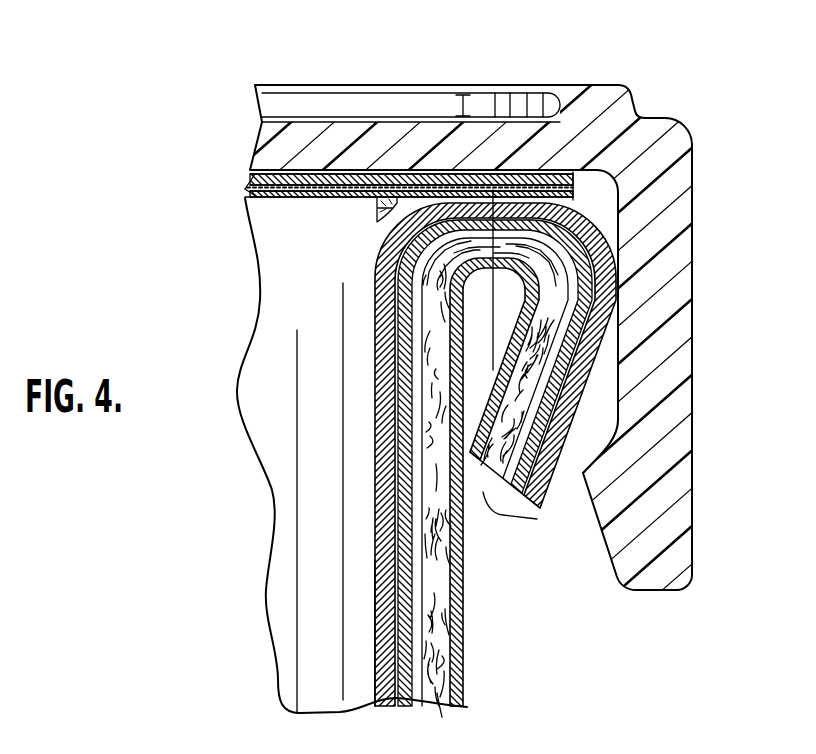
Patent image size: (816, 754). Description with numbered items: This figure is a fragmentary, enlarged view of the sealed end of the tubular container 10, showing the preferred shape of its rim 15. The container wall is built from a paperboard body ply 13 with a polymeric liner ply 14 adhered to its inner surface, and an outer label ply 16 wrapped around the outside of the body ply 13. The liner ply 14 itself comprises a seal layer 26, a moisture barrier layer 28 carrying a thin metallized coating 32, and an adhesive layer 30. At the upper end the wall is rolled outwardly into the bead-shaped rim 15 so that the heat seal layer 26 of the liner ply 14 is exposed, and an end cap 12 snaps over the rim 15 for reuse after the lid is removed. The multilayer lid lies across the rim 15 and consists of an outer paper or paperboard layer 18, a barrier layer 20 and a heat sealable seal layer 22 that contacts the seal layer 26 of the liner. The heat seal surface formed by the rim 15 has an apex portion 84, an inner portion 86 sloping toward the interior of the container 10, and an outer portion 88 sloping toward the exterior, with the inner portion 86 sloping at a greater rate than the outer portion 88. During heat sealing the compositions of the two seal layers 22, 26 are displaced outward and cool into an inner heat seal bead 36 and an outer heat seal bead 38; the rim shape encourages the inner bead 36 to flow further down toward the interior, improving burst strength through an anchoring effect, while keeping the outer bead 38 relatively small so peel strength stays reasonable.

The tubular container 10 is at (647, 75).
The end cap 12 is at (660, 113).
The body ply 13 is at (605, 253).
The liner ply 14 is at (494, 522).
The rim 15 is at (597, 195).
The outer label ply 16 is at (468, 653).
The paper or paperboard layer 18 is at (250, 180).
The barrier layer 20 is at (247, 188).
The seal layer 22 is at (247, 193).
The seal layer 26 is at (567, 475).
The moisture barrier layer 28 is at (597, 383).
The adhesive layer 30 is at (363, 282).
The metallized coating 32 is at (600, 333).
The inner heat seal bead 36 is at (380, 208).
The outer heat seal bead 38 is at (480, 203).
The apex portion 84 is at (493, 190).
The inner portion 86 is at (374, 226).
The outer portion 88 is at (612, 212).